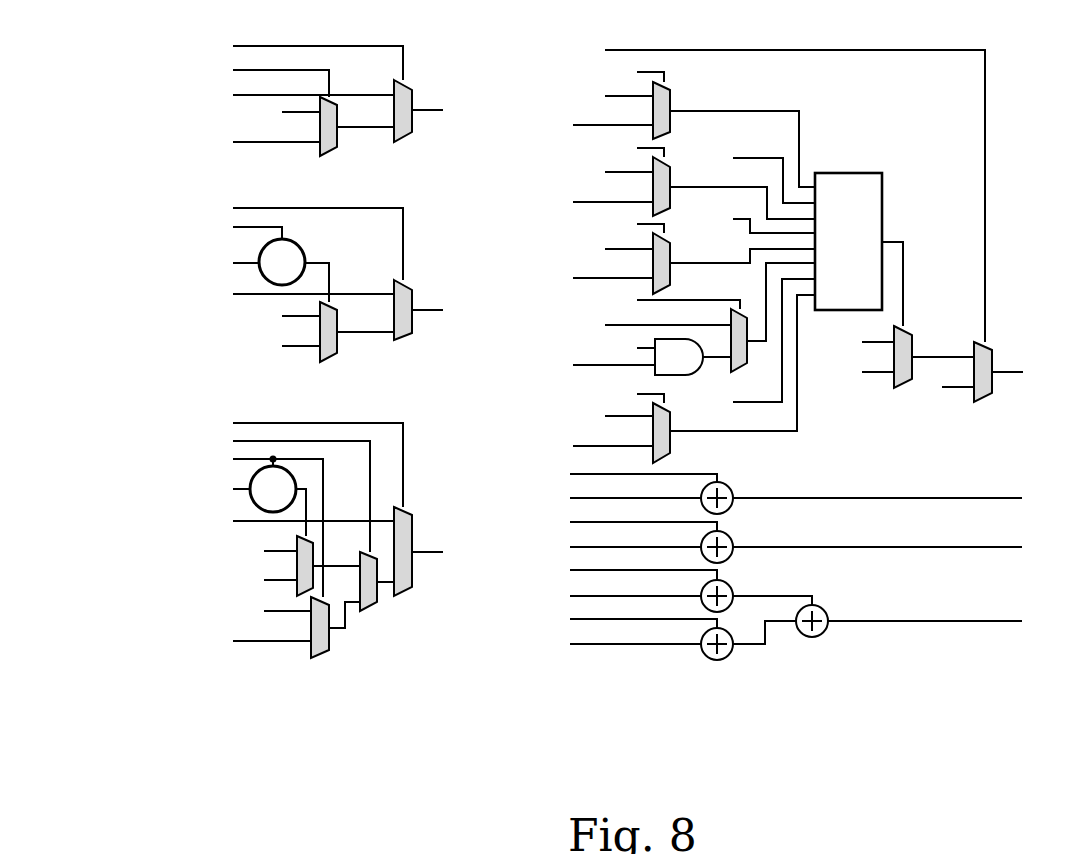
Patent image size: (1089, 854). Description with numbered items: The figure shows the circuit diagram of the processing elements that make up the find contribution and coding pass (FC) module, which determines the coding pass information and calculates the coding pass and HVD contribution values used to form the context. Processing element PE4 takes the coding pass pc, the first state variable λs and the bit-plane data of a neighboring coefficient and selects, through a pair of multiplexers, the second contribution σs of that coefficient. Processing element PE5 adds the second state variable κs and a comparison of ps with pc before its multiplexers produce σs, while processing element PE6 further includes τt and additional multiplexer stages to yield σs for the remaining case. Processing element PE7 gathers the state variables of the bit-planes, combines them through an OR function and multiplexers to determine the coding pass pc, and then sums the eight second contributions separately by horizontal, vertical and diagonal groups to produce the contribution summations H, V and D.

The processing element PE4 is at (334, 117).
The processing element PE5 is at (334, 296).
The processing element PE6 is at (334, 555).
The processing element PE7 is at (787, 370).